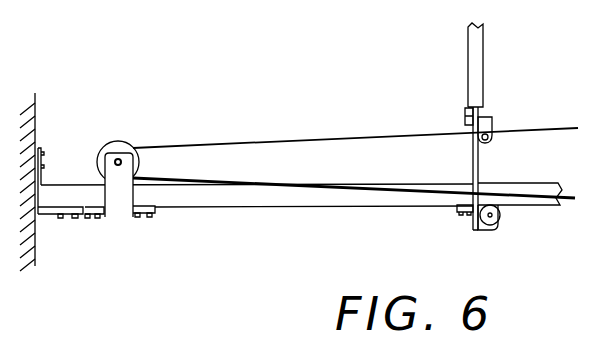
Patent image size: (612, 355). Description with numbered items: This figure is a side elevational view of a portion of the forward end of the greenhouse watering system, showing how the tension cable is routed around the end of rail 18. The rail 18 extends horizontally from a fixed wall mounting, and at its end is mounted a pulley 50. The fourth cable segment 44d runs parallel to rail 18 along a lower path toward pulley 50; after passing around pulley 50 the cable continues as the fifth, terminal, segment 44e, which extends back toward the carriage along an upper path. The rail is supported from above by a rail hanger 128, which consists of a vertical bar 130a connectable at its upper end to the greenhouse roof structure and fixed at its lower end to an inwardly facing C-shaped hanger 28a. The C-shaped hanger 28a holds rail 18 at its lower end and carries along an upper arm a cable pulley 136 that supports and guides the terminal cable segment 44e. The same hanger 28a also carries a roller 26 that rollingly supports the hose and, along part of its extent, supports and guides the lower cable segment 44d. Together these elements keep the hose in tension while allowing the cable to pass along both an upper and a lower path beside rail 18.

The rail 18 is at (310, 207).
The pulley 50 is at (117, 143).
The fifth, terminal, segment of cable 44e is at (316, 137).
The fourth cable segment 44d is at (431, 188).
The vertical bar 130a is at (470, 80).
The support frame or rail hanger 128 is at (486, 85).
The cable pulley 136 is at (490, 124).
The C-shaped hanger 28a is at (476, 165).
The roller 26 is at (498, 213).